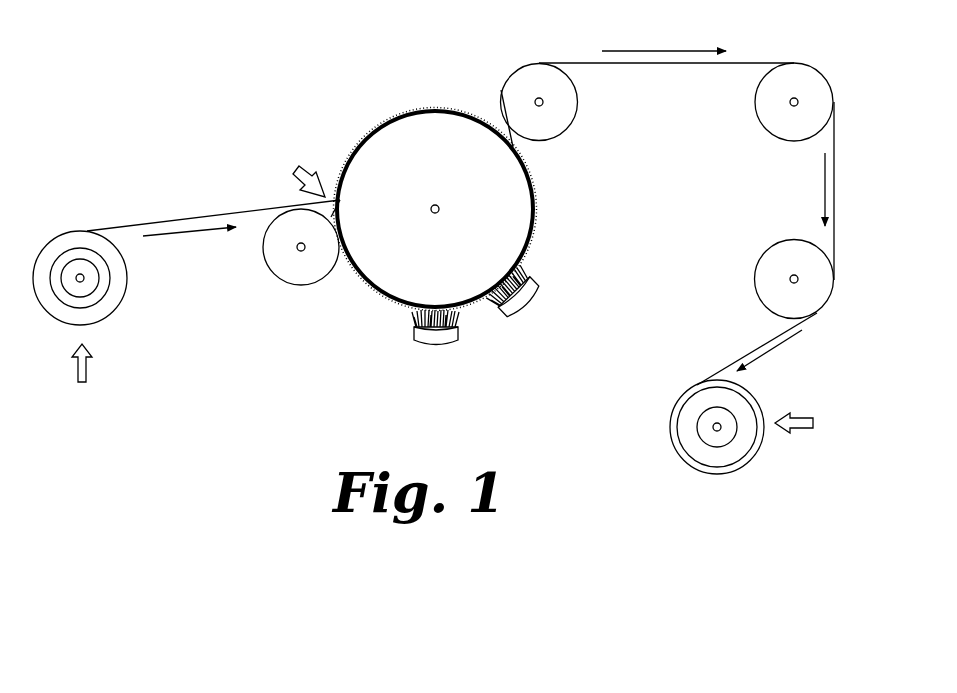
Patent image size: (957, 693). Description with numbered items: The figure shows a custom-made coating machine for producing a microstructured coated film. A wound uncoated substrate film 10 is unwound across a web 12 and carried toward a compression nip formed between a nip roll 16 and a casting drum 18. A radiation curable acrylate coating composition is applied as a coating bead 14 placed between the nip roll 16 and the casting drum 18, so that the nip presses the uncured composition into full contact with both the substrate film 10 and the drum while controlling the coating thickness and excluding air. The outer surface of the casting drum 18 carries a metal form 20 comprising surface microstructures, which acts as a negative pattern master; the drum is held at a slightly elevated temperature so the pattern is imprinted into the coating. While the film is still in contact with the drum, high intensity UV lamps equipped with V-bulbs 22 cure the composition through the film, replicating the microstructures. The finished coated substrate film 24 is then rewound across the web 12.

The uncoated substrate film 10 is at (88, 370).
The web 12 is at (150, 222).
The coating bead 14 is at (296, 164).
The nip roll 16 is at (293, 287).
The casting drum 18 is at (385, 135).
The metal form 20 is at (423, 110).
The V-bulbs 22 is at (443, 342).
The coated substrate film 24 is at (672, 445).